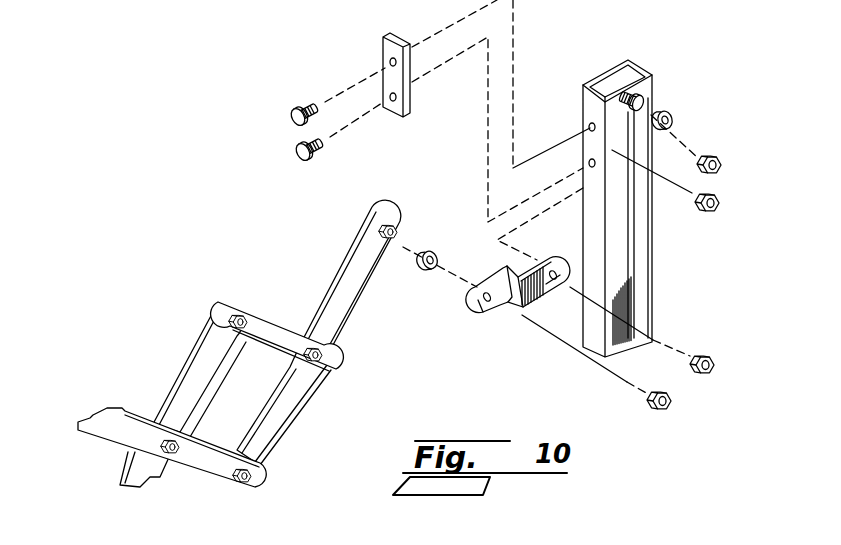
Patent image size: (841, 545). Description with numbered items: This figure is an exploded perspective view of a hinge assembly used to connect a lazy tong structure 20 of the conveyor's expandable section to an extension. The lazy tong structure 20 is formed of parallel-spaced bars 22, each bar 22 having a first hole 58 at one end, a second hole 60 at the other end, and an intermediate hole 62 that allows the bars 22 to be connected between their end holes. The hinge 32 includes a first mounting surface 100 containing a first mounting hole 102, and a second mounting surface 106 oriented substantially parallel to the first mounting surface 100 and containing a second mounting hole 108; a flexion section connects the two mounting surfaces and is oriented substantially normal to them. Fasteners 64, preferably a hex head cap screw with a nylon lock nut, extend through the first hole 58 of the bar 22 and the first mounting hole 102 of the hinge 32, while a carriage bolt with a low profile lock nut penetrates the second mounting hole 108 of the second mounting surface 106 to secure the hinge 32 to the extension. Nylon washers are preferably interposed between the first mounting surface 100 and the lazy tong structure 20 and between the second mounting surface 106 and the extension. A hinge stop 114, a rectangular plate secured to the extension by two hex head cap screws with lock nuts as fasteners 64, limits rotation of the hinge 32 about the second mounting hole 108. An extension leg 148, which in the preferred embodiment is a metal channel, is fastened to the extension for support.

The lazy tong structure 20 is at (270, 432).
The bar 22 is at (308, 398).
The hinge 32 is at (508, 308).
The first hole 58 is at (227, 300).
The second hole 60 is at (242, 484).
The intermediate hole 62 is at (170, 454).
The fastener 64 is at (722, 206).
The first mounting surface 100 is at (490, 302).
The first mounting hole 102 is at (470, 300).
The second mounting surface 106 is at (553, 300).
The second mounting hole 108 is at (547, 261).
The hinge stop 114 is at (385, 50).
The extension leg 148 is at (653, 270).